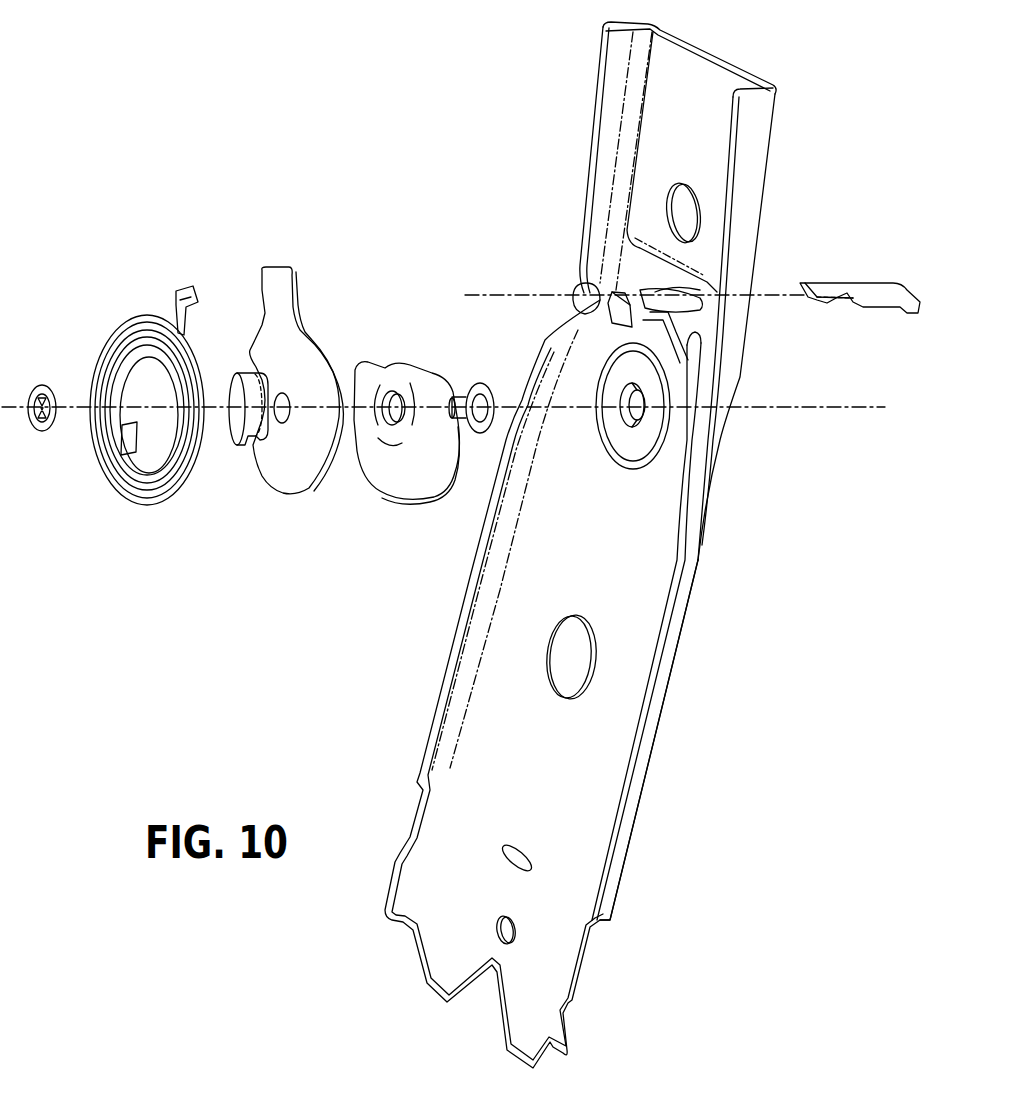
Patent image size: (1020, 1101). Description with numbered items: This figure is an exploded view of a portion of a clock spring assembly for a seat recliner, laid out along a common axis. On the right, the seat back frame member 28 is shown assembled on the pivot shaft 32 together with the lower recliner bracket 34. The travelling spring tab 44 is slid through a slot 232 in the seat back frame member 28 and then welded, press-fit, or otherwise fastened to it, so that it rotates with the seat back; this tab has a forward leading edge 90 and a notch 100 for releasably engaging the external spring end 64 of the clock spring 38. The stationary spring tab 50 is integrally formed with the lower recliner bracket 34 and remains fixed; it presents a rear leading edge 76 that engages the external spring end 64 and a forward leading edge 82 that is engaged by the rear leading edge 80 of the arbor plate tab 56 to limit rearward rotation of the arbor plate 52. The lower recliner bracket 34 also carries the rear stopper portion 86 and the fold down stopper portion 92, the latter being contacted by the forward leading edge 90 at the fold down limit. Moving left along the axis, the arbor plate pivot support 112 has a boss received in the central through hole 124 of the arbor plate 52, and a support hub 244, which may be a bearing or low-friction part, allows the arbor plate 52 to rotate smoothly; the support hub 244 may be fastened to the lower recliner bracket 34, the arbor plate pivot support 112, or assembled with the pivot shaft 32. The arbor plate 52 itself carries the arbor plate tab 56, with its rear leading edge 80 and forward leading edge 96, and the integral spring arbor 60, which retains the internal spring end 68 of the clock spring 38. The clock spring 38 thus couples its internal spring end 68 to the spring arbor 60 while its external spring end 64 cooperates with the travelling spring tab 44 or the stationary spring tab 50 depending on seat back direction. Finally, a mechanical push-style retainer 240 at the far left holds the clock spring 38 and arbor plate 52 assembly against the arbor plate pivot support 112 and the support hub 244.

The seat back frame member 28 is at (753, 130).
The pivot shaft 32 is at (645, 408).
The lower recliner bracket 34 is at (640, 762).
The clock spring 38 is at (117, 333).
The travelling spring tab 44 is at (873, 290).
The stationary spring tab 50 is at (630, 293).
The arbor plate 52 is at (279, 392).
The arbor plate tab 56 is at (272, 278).
The spring arbor 60 is at (253, 447).
The external spring end 64 is at (186, 297).
The internal spring end 68 is at (122, 442).
The rear leading edge 76 is at (647, 310).
The rear leading edge 80 is at (295, 290).
The forward leading edge 82 is at (613, 288).
The rear stopper portion 86 is at (693, 333).
The forward leading edge 90 is at (830, 283).
The fold down stopper portion 92 is at (587, 312).
The forward leading edge 96 is at (260, 292).
The notch 100 is at (837, 303).
The arbor plate pivot support 112 is at (400, 487).
The central through hole 124 is at (285, 393).
The slot 232 is at (670, 287).
The push-style retainer 240 is at (47, 387).
The support hub 244 is at (490, 383).